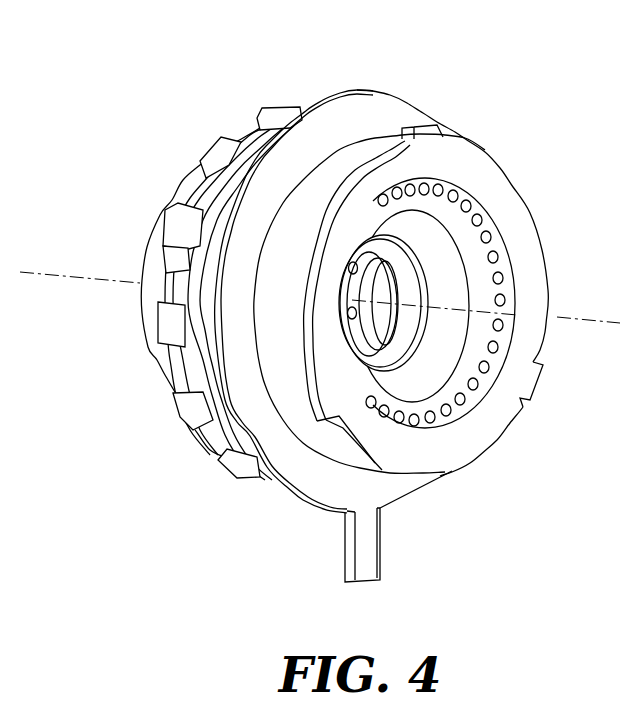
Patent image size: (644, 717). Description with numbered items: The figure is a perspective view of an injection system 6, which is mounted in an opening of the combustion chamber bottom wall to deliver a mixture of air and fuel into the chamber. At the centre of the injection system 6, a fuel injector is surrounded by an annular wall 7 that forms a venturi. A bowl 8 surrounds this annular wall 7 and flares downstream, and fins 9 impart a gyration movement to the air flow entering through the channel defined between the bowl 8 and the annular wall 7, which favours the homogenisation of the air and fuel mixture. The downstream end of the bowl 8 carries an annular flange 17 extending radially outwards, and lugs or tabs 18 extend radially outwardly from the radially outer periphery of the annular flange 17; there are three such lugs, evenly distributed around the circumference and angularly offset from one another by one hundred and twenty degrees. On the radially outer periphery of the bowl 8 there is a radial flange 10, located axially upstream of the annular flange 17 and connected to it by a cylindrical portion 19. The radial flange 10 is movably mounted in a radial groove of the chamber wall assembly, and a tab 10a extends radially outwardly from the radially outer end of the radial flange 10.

The injection system 6 is at (362, 73).
The annular wall 7 is at (410, 288).
The bowl 8 is at (473, 242).
The fins 9 is at (165, 272).
The radial flange 10 is at (313, 475).
The tab 10a is at (367, 556).
The annular flange 17 is at (493, 182).
The lugs or tabs 18 is at (425, 124).
The cylindrical portion 19 is at (353, 150).